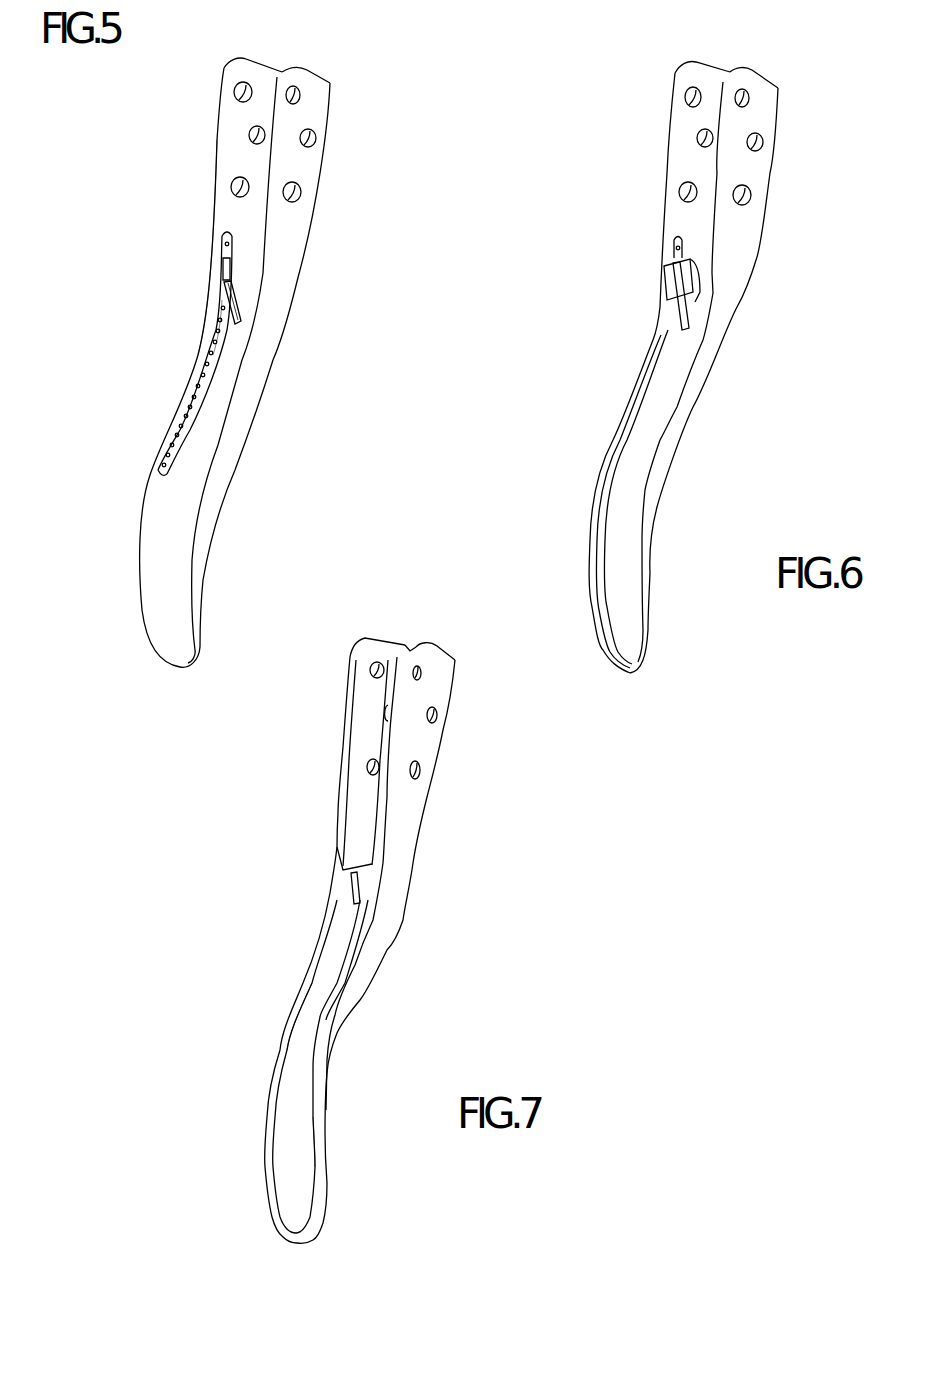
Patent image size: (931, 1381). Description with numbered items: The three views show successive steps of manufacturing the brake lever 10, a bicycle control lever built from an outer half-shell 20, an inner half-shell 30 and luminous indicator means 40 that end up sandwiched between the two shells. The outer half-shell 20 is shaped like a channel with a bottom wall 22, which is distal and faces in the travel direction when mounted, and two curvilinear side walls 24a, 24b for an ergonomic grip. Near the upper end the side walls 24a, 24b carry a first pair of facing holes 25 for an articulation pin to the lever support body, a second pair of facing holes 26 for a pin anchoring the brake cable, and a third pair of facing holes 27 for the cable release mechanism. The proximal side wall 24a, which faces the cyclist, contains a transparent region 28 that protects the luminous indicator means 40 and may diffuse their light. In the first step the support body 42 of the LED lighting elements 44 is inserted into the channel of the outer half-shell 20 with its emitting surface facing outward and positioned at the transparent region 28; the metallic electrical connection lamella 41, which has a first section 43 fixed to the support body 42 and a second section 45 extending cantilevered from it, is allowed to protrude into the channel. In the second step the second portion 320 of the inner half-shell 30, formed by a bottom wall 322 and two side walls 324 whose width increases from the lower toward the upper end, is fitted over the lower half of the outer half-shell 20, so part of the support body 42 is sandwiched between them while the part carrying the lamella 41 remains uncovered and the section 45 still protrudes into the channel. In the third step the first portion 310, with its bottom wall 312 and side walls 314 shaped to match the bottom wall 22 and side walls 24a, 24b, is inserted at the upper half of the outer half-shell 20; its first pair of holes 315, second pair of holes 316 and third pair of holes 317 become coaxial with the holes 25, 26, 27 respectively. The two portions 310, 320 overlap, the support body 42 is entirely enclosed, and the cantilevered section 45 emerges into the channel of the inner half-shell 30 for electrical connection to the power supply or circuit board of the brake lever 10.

In FIG. 7, the brake lever 10 is at (611, 883).
In FIG. 5, the outer half-shell 20 is at (382, 240).
In FIG. 6, the outer half-shell 20 is at (534, 532).
In FIG. 7, the outer half-shell 20 is at (422, 901).
In FIG. 5, the bottom wall 22 is at (300, 70).
In FIG. 6, the bottom wall 22 is at (750, 72).
In FIG. 7, the bottom wall 22 is at (445, 650).
In FIG. 5, the side wall 24a is at (222, 95).
In FIG. 6, the side wall 24a is at (672, 97).
In FIG. 7, the side wall 24a is at (337, 818).
In FIG. 5, the side wall 24b is at (263, 337).
In FIG. 6, the side wall 24b is at (683, 398).
In FIG. 7, the side wall 24b is at (365, 963).
In FIG. 5, the first pair of facing holes 25 is at (260, 167).
In FIG. 6, the first pair of facing holes 25 is at (700, 172).
In FIG. 7, the first pair of facing holes 25 is at (370, 780).
In FIG. 5, the second pair of facing holes 26 is at (246, 102).
In FIG. 6, the second pair of facing holes 26 is at (697, 107).
In FIG. 7, the second pair of facing holes 26 is at (377, 639).
In FIG. 5, the third pair of facing holes 27 is at (307, 147).
In FIG. 6, the third pair of facing holes 27 is at (752, 149).
In FIG. 7, the third pair of facing holes 27 is at (390, 728).
In FIG. 5, the transparent region 28 is at (186, 354).
In FIG. 7, the inner half-shell 30 is at (252, 1133).
In FIG. 5, the luminous indicator means 40 is at (150, 424).
In FIG. 6, the luminous indicator means 40 is at (652, 238).
In FIG. 5, the metallic electrical connection lamella 41 is at (275, 291).
In FIG. 6, the metallic electrical connection lamella 41 is at (656, 318).
In FIG. 5, the support body 42 is at (207, 380).
In FIG. 5, the first section 43 is at (220, 270).
In FIG. 6, the first section 43 is at (680, 278).
In FIG. 5, the lighting elements 44 is at (177, 428).
In FIG. 5, the second section 45 is at (230, 313).
In FIG. 6, the second section 45 is at (692, 312).
In FIG. 7, the second section 45 is at (352, 894).
In FIG. 7, the first portion 310 is at (362, 730).
In FIG. 7, the bottom wall 312 is at (413, 648).
In FIG. 7, the side walls 314 is at (360, 707).
In FIG. 7, the first pair of facing holes 315 is at (415, 770).
In FIG. 7, the second pair of facing holes 316 is at (417, 673).
In FIG. 7, the third pair of facing holes 317 is at (432, 715).
In FIG. 6, the second portion 320 is at (587, 479).
In FIG. 7, the second portion 320 is at (318, 960).
In FIG. 7, the bottom wall 322 is at (302, 1160).
In FIG. 7, the side walls 324 is at (290, 1060).